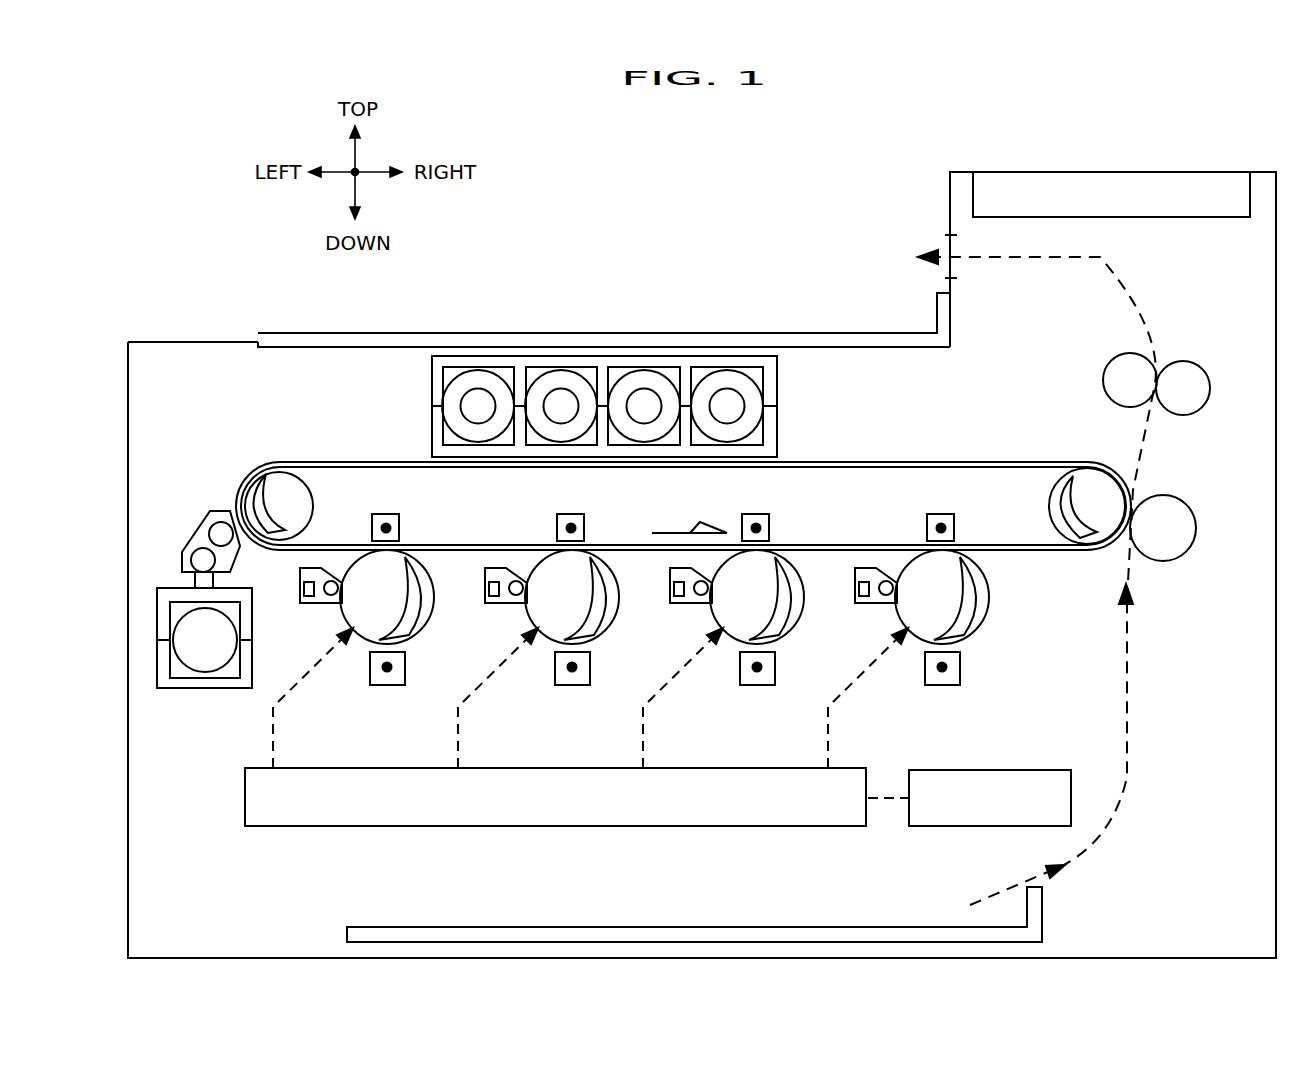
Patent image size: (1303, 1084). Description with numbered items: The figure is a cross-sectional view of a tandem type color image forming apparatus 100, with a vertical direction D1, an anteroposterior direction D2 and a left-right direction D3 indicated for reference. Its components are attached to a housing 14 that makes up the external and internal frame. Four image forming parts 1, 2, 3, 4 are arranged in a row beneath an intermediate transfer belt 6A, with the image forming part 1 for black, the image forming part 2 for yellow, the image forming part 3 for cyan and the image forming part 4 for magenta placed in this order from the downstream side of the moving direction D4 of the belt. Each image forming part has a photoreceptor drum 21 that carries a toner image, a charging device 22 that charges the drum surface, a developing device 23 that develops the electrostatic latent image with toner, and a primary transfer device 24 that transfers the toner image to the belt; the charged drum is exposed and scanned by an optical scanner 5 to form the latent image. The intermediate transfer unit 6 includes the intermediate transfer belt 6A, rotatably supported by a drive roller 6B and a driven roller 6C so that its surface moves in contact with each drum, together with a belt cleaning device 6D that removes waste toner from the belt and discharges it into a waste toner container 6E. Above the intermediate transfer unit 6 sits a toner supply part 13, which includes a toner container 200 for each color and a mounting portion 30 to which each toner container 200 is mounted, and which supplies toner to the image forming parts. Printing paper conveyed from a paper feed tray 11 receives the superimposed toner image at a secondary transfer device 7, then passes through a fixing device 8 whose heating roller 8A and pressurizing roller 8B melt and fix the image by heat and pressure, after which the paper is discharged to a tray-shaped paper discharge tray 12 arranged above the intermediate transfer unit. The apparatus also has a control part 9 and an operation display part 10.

The image forming apparatus 100 is at (250, 232).
The housing 14 is at (222, 340).
The paper discharge tray 12 is at (855, 333).
The operation display part 10 is at (973, 193).
The toner supply part 13 is at (806, 384).
The mounting portion 30 is at (743, 367).
The toner container 200 is at (709, 372).
The intermediate transfer unit 6 is at (263, 413).
The intermediate transfer belt 6A is at (380, 462).
The drive roller 6B is at (1050, 480).
The driven roller 6C is at (303, 482).
The belt cleaning device 6D is at (193, 528).
The waste toner container 6E is at (203, 693).
The primary transfer device 24 is at (944, 514).
The developing device 23 is at (855, 576).
The photoreceptor drum 21 is at (985, 625).
The charging device 22 is at (959, 688).
The image forming part 4 is at (344, 684).
The image forming part 3 is at (529, 684).
The image forming part 2 is at (714, 684).
The image forming part 1 is at (899, 684).
The optical scanner 5 is at (243, 800).
The control part 9 is at (1043, 768).
The paper feed tray 11 is at (725, 927).
The secondary transfer device 7 is at (1173, 563).
The fixing device 8 is at (1131, 385).
The heating roller 8A is at (1103, 380).
The pressurizing roller 8B is at (1192, 413).
The vertical direction D1 is at (360, 165).
The anteroposterior direction D2 is at (350, 180).
The left-right direction D3 is at (365, 180).
The moving direction D4 is at (664, 533).